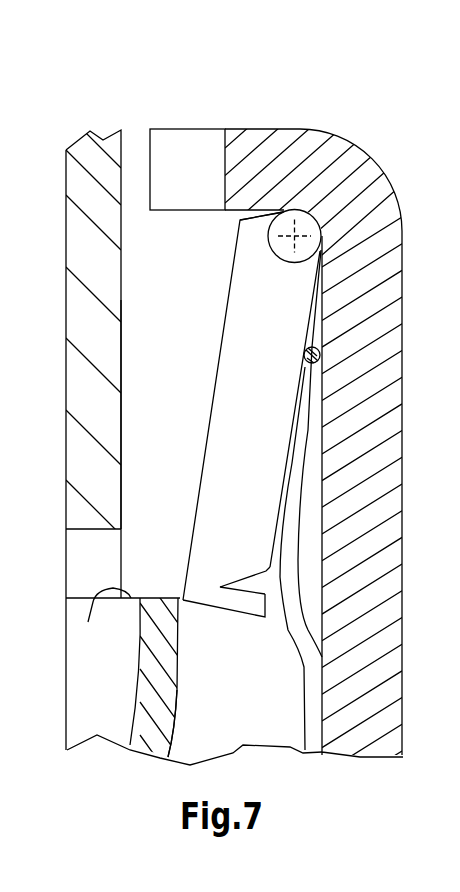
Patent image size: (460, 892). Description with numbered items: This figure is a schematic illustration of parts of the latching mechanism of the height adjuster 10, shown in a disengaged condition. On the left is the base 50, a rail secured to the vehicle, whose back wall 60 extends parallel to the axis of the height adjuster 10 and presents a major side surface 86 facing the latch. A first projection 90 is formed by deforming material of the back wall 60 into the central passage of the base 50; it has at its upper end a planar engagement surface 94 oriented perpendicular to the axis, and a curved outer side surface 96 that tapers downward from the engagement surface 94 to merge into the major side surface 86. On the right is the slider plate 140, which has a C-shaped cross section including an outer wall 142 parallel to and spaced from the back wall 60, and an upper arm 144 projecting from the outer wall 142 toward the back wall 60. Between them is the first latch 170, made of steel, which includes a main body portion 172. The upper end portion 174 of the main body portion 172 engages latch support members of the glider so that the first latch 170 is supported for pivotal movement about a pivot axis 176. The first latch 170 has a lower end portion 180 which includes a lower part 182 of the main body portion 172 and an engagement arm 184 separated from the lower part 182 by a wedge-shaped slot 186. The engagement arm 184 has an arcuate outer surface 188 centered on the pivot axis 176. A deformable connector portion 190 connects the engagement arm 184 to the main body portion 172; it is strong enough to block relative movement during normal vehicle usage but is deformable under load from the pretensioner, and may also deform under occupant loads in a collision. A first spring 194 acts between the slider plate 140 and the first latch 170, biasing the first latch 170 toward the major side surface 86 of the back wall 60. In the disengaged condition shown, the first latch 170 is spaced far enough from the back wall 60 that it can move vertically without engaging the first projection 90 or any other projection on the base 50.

The height adjuster 10 is at (53, 220).
The base 50 is at (66, 296).
The back wall 60 is at (93, 395).
The major side surface 86 is at (128, 485).
The first projection 90 is at (177, 703).
The engagement surface 94 is at (88, 622).
The curved outer side surface 96 is at (180, 658).
The slider plate 140 is at (281, 130).
The outer wall 142 is at (368, 282).
The upper arm 144 is at (261, 128).
The first latch 170 is at (218, 359).
The main body portion 172 is at (218, 440).
The upper end portion 174 is at (265, 270).
The pivot axis 176 is at (300, 235).
The lower end portion 180 is at (279, 530).
The lower part 182 is at (253, 543).
The engagement arm 184 is at (253, 604).
The wedge-shaped slot 186 is at (253, 588).
The arcuate outer surface 188 is at (233, 613).
The deformable connector portion 190 is at (207, 588).
The first spring 194 is at (303, 398).